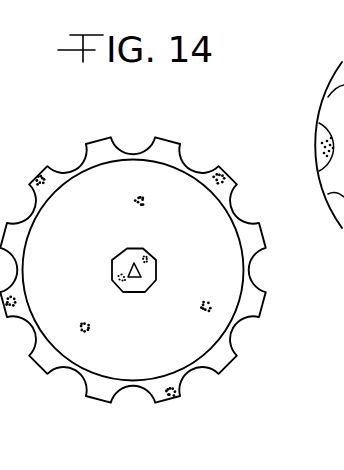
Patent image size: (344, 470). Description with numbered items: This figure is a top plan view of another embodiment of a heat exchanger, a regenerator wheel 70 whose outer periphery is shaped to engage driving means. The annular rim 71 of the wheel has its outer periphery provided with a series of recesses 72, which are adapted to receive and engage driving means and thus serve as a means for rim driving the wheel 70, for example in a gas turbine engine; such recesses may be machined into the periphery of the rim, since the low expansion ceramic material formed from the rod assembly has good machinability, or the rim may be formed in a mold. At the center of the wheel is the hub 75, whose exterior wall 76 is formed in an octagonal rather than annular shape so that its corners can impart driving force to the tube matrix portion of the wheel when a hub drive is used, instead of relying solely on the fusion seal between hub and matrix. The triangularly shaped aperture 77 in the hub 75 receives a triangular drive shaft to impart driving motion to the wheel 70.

The regenerator wheel 70 is at (197, 150).
The rim 71 is at (254, 237).
The recesses 72 is at (253, 344).
The hub 75 is at (147, 275).
The wall 76 is at (123, 284).
The triangularly shaped aperture 77 is at (134, 267).